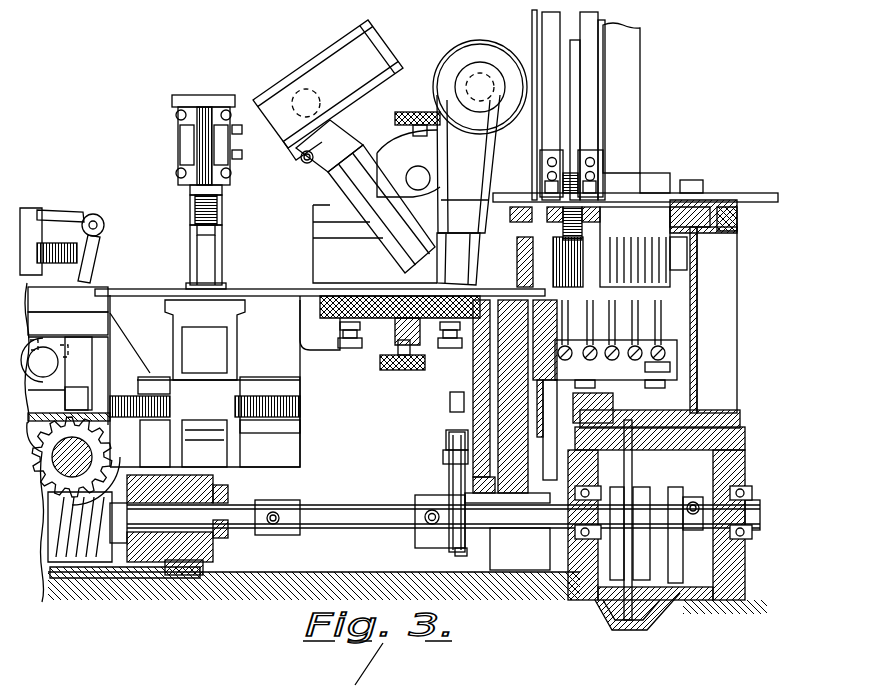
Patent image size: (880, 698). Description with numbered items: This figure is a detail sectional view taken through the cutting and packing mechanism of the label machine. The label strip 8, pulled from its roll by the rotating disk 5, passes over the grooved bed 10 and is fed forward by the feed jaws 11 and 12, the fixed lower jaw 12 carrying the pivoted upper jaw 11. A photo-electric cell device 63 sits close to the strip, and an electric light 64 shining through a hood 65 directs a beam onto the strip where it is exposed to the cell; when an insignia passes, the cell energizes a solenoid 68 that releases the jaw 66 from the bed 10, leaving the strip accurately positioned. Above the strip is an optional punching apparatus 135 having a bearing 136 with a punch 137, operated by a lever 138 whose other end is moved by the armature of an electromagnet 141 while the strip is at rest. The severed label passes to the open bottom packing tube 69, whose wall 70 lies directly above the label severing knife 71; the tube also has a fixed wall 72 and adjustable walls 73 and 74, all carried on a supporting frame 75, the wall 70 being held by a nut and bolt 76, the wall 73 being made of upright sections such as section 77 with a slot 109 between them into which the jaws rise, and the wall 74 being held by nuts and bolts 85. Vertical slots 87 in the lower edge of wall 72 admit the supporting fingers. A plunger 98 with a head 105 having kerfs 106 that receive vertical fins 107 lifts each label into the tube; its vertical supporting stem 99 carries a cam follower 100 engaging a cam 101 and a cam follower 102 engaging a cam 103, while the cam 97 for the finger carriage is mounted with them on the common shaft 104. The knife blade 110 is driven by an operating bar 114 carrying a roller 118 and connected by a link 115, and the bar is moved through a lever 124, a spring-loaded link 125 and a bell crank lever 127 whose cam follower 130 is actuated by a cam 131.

The rotating disk 5 is at (590, 46).
The label strip 8 is at (137, 293).
The bed 10 is at (320, 297).
The upper feed jaw 11 is at (513, 282).
The fixed lower feed jaw 12 is at (511, 401).
The photo-electric cell device 63 is at (482, 75).
The electric light 64 is at (304, 90).
The hood 65 is at (395, 240).
The jaw 66 is at (93, 276).
The solenoid 68 is at (25, 230).
The packing tube 69 is at (640, 62).
The wall 70 is at (528, 112).
The label severing knife 71 is at (635, 247).
The fixed wall 72 is at (658, 218).
The adjustable wall 73 is at (600, 137).
The adjustable wall 74 is at (600, 63).
The supporting frame 75 is at (762, 193).
The nut and bolt 76 is at (497, 173).
The upright section 77 is at (553, 92).
The nut and bolts 85 is at (700, 184).
The vertical slots 87 is at (655, 262).
The cam 97 is at (672, 540).
The plunger 98 is at (680, 358).
The vertical supporting stem 99 is at (634, 468).
The cam follower 100 is at (577, 507).
The cam 101 is at (618, 565).
The cam follower 102 is at (645, 610).
The cam 103 is at (640, 545).
The common shaft 104 is at (740, 505).
The head 105 is at (680, 347).
The kerfs or slots 106 is at (672, 330).
The fins 107 is at (668, 310).
The slot 109 is at (555, 295).
The knife blade 110 is at (495, 207).
The operating bar 114 is at (440, 530).
The link 115 is at (558, 425).
The roller 118 is at (525, 468).
The lever 124 is at (445, 355).
The link 125 is at (450, 400).
The bell crank lever 127 is at (445, 438).
The cam follower 130 is at (445, 455).
The cam 131 is at (462, 552).
The punching apparatus 135 is at (190, 95).
The bearing 136 is at (207, 252).
The punch 137 is at (205, 218).
The lever 138 is at (205, 200).
The electromagnet 141 is at (178, 128).